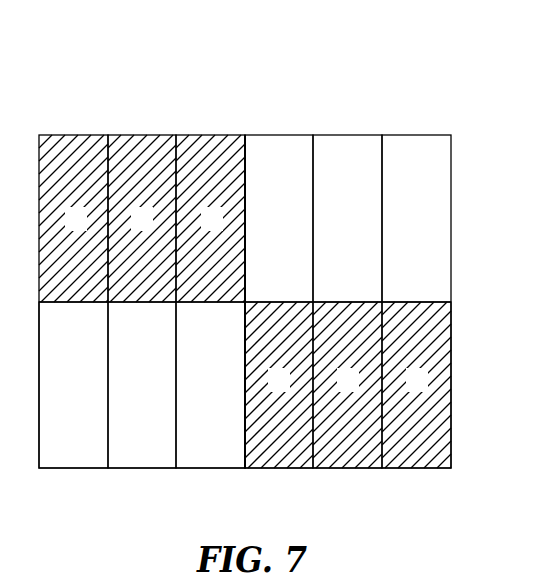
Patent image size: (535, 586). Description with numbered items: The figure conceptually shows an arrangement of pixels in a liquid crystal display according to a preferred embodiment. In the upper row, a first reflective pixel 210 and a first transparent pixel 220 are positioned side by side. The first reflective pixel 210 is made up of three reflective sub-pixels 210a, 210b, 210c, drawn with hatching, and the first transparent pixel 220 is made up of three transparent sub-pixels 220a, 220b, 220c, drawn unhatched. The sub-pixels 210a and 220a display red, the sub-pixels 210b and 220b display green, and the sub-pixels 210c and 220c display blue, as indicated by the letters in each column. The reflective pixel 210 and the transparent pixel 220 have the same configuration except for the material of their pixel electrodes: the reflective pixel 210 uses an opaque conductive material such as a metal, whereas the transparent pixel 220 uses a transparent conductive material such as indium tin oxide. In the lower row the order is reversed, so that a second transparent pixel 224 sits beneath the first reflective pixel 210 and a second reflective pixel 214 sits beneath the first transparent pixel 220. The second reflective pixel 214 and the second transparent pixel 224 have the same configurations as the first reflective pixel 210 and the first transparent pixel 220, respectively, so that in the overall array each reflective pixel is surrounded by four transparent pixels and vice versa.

The first reflective pixel 210 is at (102, 53).
The reflective sub-pixel 210a is at (77, 135).
The reflective sub-pixel 210b is at (147, 135).
The reflective sub-pixel 210c is at (213, 135).
The first transparent pixel 220 is at (293, 52).
The transparent sub-pixel 220a is at (278, 135).
The transparent sub-pixel 220b is at (350, 135).
The transparent sub-pixel 220c is at (415, 135).
The second transparent pixel 224 is at (245, 470).
The second reflective pixel 214 is at (451, 470).